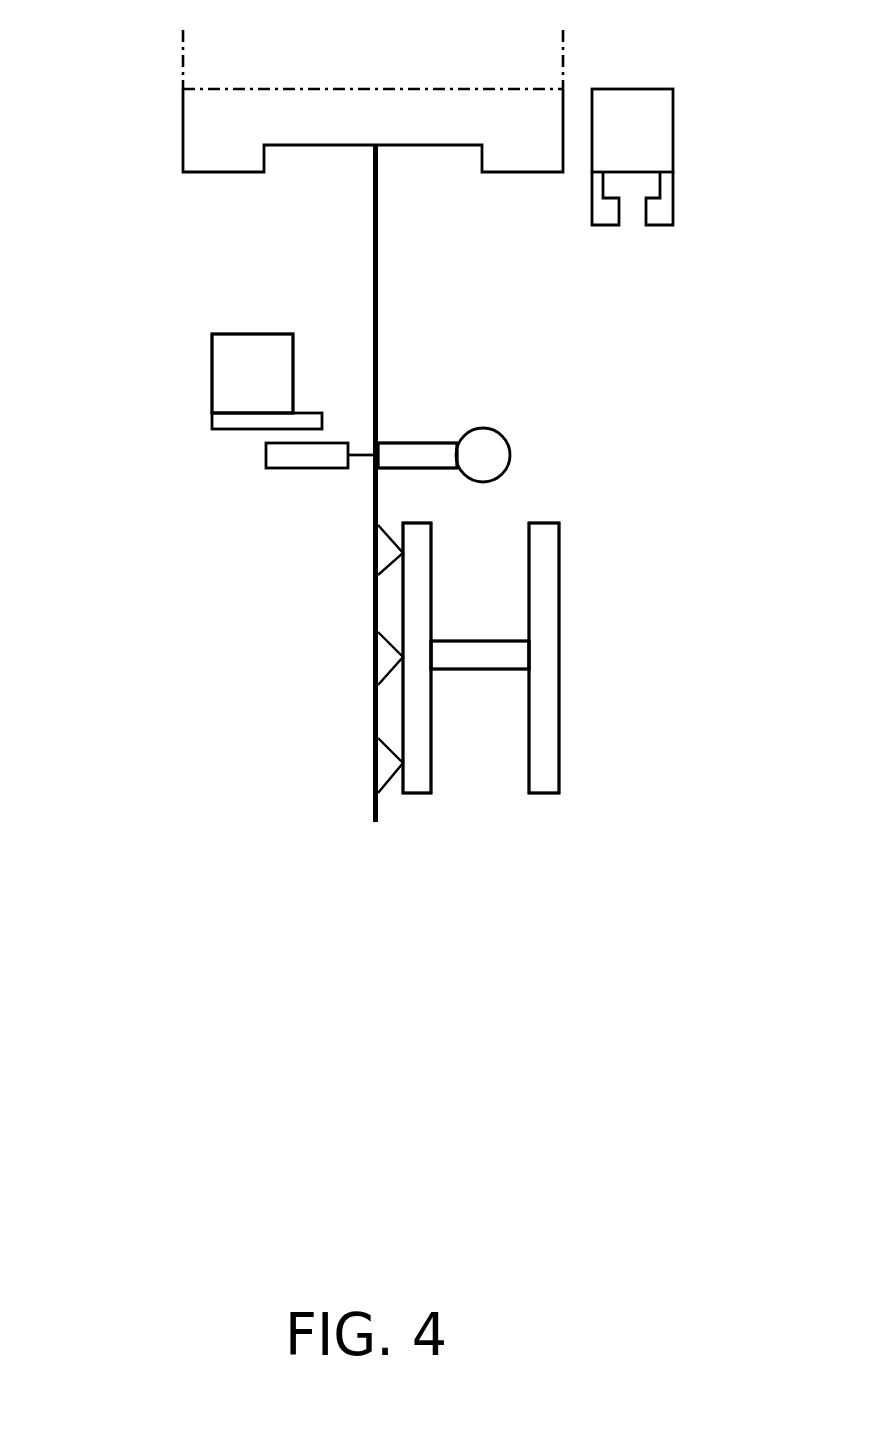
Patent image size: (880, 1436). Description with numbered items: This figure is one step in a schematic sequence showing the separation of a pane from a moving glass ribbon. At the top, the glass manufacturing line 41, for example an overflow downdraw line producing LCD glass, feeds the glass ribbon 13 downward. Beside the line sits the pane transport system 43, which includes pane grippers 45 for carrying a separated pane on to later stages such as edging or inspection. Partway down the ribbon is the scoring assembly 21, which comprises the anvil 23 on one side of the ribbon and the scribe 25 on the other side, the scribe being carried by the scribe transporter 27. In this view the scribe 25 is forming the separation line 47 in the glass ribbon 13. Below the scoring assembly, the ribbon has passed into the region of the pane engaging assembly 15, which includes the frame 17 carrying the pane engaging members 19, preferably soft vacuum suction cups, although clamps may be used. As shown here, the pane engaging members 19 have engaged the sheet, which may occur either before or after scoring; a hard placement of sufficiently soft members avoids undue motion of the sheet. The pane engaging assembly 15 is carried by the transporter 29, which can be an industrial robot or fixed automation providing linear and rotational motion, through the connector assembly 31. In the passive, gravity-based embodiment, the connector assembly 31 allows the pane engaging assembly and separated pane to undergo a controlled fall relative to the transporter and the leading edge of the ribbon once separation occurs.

The glass ribbon 13 is at (373, 223).
The pane engaging assembly 15 is at (418, 808).
The frame 17 is at (417, 602).
The pane engaging members 19 is at (373, 542).
The scoring assembly 21 is at (193, 322).
The anvil 23 is at (433, 452).
The scribe 25 is at (283, 457).
The scribe transporter 27 is at (233, 377).
The transporter 29 is at (547, 690).
The connector assembly 31 is at (478, 657).
The glass manufacturing line 41 is at (295, 89).
The pane transport system 43 is at (623, 88).
The pane grippers 45 is at (660, 209).
The separation line 47 is at (373, 457).